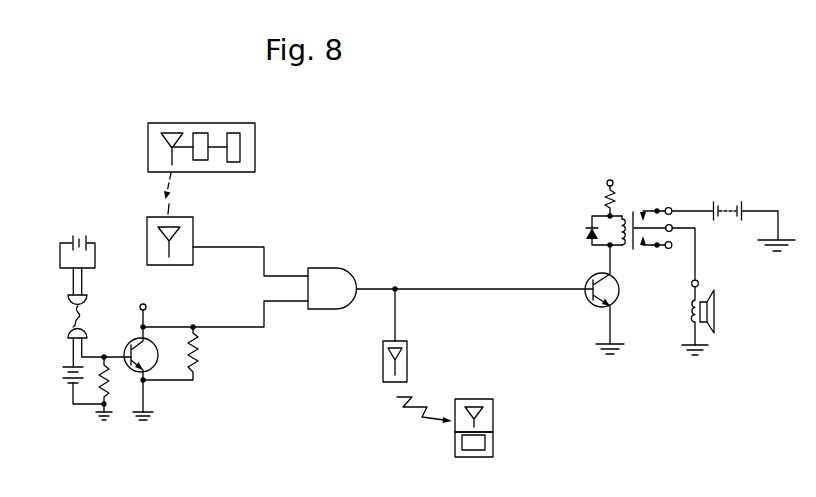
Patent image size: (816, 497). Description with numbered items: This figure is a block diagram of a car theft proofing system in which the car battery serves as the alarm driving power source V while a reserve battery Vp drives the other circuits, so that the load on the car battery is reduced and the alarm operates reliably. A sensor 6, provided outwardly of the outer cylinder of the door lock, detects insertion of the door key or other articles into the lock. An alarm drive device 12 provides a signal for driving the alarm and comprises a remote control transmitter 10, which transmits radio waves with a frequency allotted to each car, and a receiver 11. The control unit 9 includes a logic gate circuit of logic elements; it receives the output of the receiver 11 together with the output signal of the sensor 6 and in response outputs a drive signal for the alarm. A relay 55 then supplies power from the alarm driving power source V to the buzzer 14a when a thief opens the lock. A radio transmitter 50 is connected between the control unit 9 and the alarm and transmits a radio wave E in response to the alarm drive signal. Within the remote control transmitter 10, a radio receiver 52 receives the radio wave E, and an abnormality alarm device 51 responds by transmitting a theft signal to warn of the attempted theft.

The sensor 6 is at (60, 317).
The control unit 9 is at (332, 309).
The remote control transmitter 10 is at (250, 172).
The receiver 11 is at (193, 230).
The alarm drive device 12 is at (238, 194).
The radio transmitter 50 is at (383, 367).
The abnormality alarm device 51 is at (485, 443).
The radio receiver 52 is at (493, 413).
The relay 55 is at (645, 216).
The buzzer 14a is at (715, 313).
The alarm driving power source V is at (727, 205).
The reserve battery Vp is at (62, 375).
The radio wave E is at (421, 407).